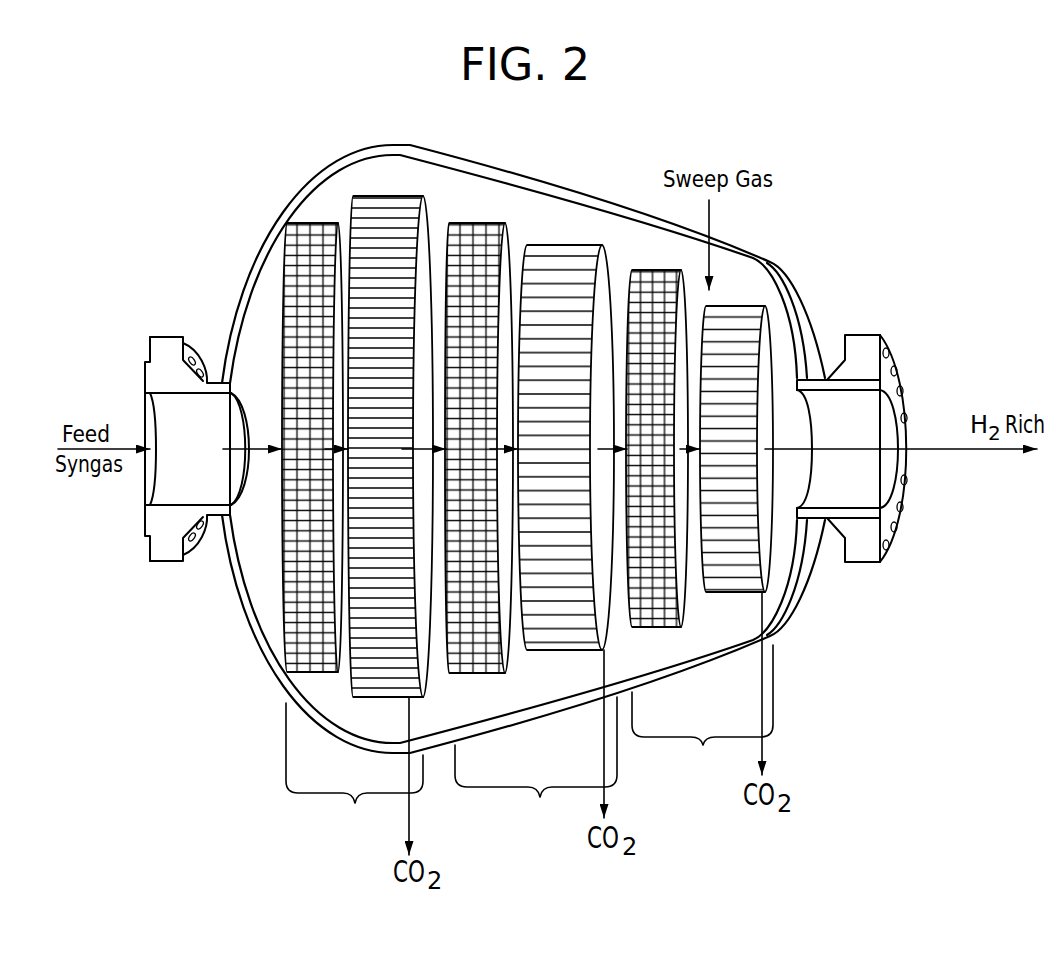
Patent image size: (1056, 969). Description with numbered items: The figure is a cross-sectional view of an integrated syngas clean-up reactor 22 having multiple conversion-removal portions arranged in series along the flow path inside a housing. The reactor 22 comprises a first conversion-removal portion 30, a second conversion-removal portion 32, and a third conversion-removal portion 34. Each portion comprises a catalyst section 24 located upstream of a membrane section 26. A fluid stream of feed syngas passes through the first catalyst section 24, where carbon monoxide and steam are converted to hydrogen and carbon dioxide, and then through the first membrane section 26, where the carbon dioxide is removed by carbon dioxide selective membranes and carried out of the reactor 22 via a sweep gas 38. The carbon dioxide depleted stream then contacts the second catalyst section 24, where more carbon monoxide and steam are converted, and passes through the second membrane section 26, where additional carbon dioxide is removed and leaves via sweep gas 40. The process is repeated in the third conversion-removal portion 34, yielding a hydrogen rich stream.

The reactor 22 is at (284, 207).
The catalyst section 24 is at (318, 230).
The membrane section 26 is at (559, 431).
The first conversion-removal portion 30 is at (354, 768).
The second conversion-removal portion 32 is at (536, 763).
The third conversion-removal portion 34 is at (702, 712).
The sweep gas 38 is at (358, 196).
The sweep gas 40 is at (539, 245).